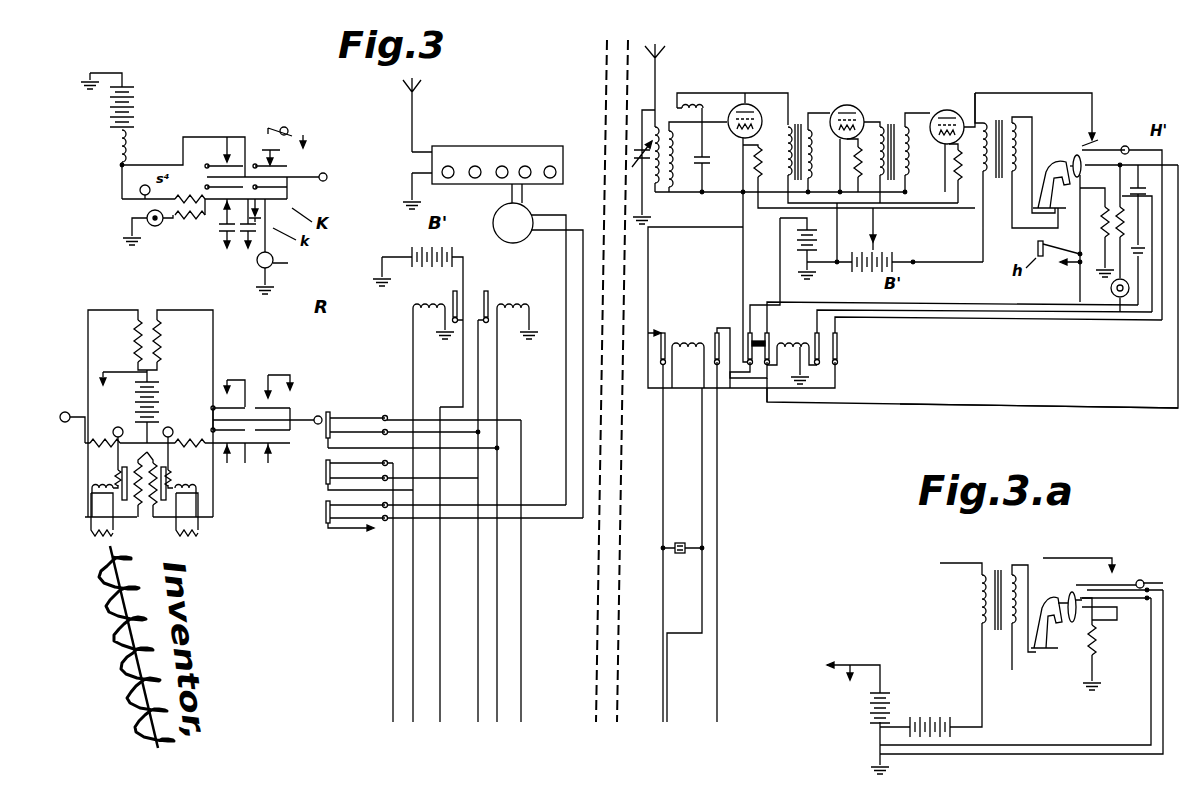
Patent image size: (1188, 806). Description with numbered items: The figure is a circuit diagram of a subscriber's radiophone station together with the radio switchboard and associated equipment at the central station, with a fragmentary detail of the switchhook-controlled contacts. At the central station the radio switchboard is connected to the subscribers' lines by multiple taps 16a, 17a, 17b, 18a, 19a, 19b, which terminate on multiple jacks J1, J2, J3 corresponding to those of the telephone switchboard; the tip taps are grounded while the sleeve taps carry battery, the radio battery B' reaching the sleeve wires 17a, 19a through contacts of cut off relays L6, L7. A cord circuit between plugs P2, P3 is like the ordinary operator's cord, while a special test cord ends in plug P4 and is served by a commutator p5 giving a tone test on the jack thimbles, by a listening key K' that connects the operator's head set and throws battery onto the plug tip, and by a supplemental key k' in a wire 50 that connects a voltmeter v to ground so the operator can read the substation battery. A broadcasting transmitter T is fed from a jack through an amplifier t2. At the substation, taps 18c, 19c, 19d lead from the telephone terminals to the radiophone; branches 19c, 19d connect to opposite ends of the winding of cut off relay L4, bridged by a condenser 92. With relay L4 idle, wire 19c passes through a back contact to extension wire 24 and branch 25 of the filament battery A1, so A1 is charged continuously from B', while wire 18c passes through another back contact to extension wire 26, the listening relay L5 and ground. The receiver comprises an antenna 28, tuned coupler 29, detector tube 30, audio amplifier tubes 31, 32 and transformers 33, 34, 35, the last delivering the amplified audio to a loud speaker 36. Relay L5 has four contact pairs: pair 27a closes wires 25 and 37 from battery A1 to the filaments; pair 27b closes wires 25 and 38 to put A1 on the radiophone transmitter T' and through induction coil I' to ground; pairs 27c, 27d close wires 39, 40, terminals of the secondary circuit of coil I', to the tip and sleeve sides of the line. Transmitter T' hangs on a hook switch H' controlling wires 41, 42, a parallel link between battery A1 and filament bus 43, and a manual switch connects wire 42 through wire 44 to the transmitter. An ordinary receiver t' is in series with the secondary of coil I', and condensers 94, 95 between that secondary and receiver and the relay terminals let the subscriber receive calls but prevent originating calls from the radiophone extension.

In FIG. 3, the multiple tap 16a is at (393, 577).
In FIG. 3, the multiple tap 17a is at (440, 641).
In FIG. 3, the multiple tap 17b is at (413, 609).
In FIG. 3, the multiple tap 18a is at (521, 578).
In FIG. 3, the tap 18c is at (717, 668).
In FIG. 3, the multiple tap 19a is at (478, 656).
In FIG. 3, the multiple tap 19b is at (497, 609).
In FIG. 3, the branch 19c is at (663, 668).
In FIG. 3, the branch 19d is at (667, 708).
In FIG. 3, the condenser 92 is at (682, 536).
In FIG. 3, the condenser 94 is at (1130, 238).
In FIG. 3, the condenser 95 is at (1139, 238).
In FIG. 3, the extension wire 24 is at (654, 275).
In FIG. 3, the branch 25 is at (780, 264).
In FIG. 3, the extension wire 26 is at (753, 392).
In FIG. 3, the pair of contacts 27a is at (750, 333).
In FIG. 3, the pair of contacts 27b is at (772, 330).
In FIG. 3, the pair of contacts 27c is at (838, 352).
In FIG. 3, the pair of contacts 27d is at (820, 334).
In FIG. 3, the antenna 28 is at (666, 71).
In FIG. 3, the tuned coupler 29 is at (690, 164).
In FIG. 3, the detector tube 30 is at (756, 103).
In FIG. 3, the audio amplifier tube 31 is at (866, 113).
In FIG. 3, the audio amplifier tube 32 is at (948, 109).
In FIG. 3, the transformer 33 is at (806, 120).
In FIG. 3, the transformer 34 is at (894, 128).
In FIG. 3, the transformer 35 is at (997, 120).
In FIG. 3a, the transformer 35 is at (997, 572).
In FIG. 3, the telephone receiver or loud speaker 36 is at (1052, 158).
In FIG. 3a, the telephone receiver or loud speaker 36 is at (1056, 608).
In FIG. 3, the wire 37 is at (743, 278).
In FIG. 3, the wire 38 is at (1040, 405).
In FIG. 3, the wire 39 is at (960, 313).
In FIG. 3, the wire 40 is at (1023, 320).
In FIG. 3, the wire 41 is at (1090, 93).
In FIG. 3, the battery wire 42 is at (1040, 298).
In FIG. 3, the filament bus 43 is at (721, 195).
In FIG. 3, the wire 44 is at (1060, 246).
In FIG. 3, the wire 50 is at (290, 248).
In FIG. 3, the radio battery B' is at (140, 106).
In FIG. 3a, the radio battery B' is at (946, 680).
In FIG. 3, the A battery A1 is at (816, 245).
In FIG. 3a, the A battery A1 is at (995, 682).
In FIG. 3, the broadcasting transmitter T is at (497, 147).
In FIG. 3, the amplifier t2 is at (513, 223).
In FIG. 3, the cut off relay L4 is at (748, 352).
In FIG. 3, the relay L5 is at (784, 385).
In FIG. 3, the cut off relay L6 is at (433, 308).
In FIG. 3, the cut off relay L7 is at (517, 308).
In FIG. 3, the plug P2 is at (175, 423).
In FIG. 3, the plug P3 is at (269, 403).
In FIG. 3, the plug P4 is at (296, 168).
In FIG. 3, the commutator p5 is at (164, 232).
In FIG. 3, the multiple jack J1 is at (338, 516).
In FIG. 3, the multiple jack J2 is at (353, 475).
In FIG. 3, the multiple jack J3 is at (341, 431).
In FIG. 3, the listening key K' is at (972, 300).
In FIG. 3, the supplemental key k' is at (257, 163).
In FIG. 3, the radiophone transmitter T' is at (1105, 134).
In FIG. 3a, the hook switch H' is at (1103, 577).
In FIG. 3, the induction coil I' is at (1097, 238).
In FIG. 3, the telephone receiver t' is at (1110, 288).
In FIG. 3, the voltmeter v is at (279, 246).